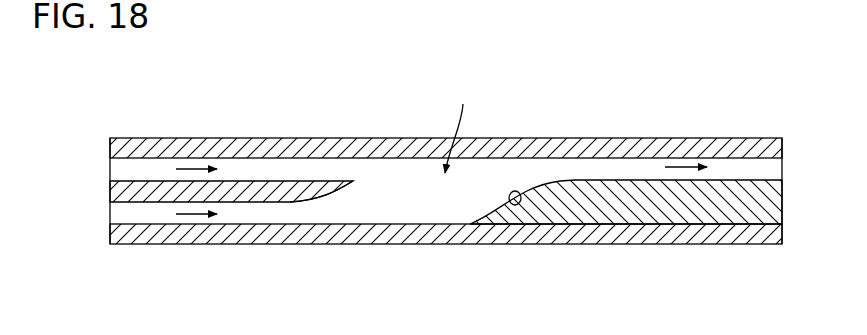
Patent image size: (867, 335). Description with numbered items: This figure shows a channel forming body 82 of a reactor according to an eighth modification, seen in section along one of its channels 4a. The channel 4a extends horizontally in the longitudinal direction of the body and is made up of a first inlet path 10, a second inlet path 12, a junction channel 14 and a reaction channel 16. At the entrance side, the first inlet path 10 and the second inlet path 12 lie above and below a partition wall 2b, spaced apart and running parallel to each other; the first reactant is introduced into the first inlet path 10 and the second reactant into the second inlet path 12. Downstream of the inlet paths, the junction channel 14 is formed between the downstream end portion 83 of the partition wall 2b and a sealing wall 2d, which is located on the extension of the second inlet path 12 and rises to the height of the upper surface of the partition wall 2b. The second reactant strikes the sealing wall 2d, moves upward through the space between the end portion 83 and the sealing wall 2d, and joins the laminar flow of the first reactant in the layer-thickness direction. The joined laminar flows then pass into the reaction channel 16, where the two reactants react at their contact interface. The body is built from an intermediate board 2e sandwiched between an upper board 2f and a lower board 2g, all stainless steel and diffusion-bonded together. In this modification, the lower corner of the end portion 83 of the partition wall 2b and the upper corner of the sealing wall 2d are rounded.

The channel forming body 82 is at (220, 111).
The first inlet path 10 is at (140, 170).
The second inlet path 12 is at (150, 213).
The junction channel 14 is at (415, 192).
The reaction channel 16 is at (635, 165).
The partition wall 2b is at (235, 193).
The sealing wall 2d is at (515, 205).
The intermediate board 2e is at (782, 200).
The upper board 2f is at (538, 138).
The lower board 2g is at (603, 244).
The channel 4a is at (460, 126).
The end portion 83 is at (323, 187).